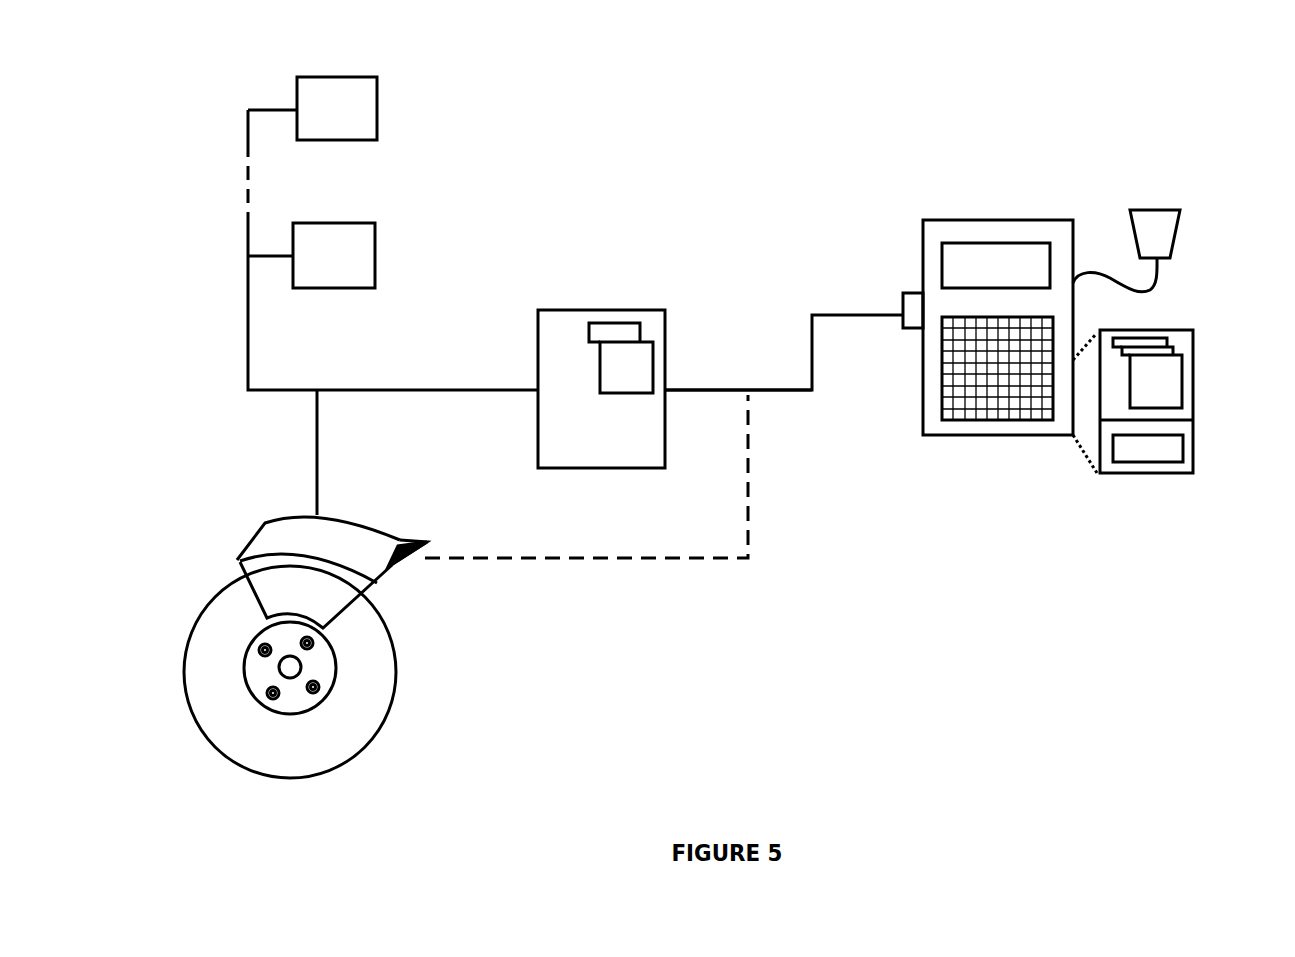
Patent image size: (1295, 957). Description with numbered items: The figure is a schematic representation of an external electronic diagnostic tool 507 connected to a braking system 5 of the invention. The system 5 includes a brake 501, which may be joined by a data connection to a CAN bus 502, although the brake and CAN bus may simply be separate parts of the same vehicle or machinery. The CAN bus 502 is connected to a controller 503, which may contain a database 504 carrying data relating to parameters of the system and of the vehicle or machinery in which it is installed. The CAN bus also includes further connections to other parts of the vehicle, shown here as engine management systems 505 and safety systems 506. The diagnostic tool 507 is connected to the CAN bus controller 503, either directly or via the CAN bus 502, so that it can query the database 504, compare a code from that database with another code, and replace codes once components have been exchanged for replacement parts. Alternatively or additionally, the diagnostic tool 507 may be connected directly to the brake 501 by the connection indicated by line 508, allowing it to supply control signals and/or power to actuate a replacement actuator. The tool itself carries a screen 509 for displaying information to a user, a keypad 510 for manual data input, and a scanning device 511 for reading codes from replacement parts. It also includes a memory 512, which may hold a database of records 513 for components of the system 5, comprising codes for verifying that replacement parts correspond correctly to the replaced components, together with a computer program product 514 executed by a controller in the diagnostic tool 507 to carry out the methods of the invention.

The system 5 is at (186, 326).
The brake 501 is at (297, 530).
The CAN bus 502 is at (690, 390).
The controller 503 is at (551, 310).
The database 504 is at (633, 362).
The engine management systems 505 is at (334, 255).
The safety systems 506 is at (337, 108).
The electronic diagnostic tool 507 is at (942, 152).
The line 508 is at (575, 560).
The screen 509 is at (958, 255).
The keypad 510 is at (958, 410).
The scanning device 511 is at (1160, 216).
The memory 512 is at (1180, 343).
The records 513 is at (1160, 390).
The computer program product 514 is at (1160, 450).